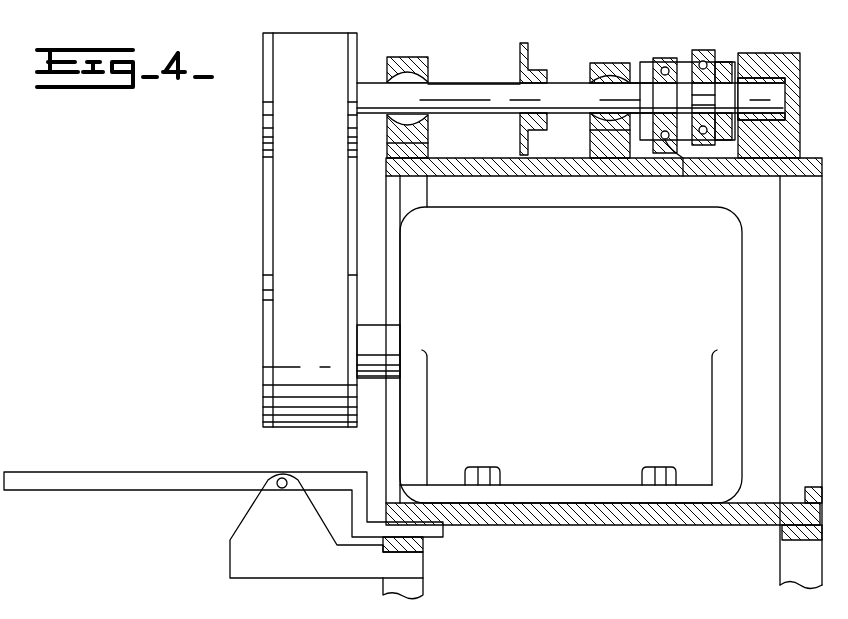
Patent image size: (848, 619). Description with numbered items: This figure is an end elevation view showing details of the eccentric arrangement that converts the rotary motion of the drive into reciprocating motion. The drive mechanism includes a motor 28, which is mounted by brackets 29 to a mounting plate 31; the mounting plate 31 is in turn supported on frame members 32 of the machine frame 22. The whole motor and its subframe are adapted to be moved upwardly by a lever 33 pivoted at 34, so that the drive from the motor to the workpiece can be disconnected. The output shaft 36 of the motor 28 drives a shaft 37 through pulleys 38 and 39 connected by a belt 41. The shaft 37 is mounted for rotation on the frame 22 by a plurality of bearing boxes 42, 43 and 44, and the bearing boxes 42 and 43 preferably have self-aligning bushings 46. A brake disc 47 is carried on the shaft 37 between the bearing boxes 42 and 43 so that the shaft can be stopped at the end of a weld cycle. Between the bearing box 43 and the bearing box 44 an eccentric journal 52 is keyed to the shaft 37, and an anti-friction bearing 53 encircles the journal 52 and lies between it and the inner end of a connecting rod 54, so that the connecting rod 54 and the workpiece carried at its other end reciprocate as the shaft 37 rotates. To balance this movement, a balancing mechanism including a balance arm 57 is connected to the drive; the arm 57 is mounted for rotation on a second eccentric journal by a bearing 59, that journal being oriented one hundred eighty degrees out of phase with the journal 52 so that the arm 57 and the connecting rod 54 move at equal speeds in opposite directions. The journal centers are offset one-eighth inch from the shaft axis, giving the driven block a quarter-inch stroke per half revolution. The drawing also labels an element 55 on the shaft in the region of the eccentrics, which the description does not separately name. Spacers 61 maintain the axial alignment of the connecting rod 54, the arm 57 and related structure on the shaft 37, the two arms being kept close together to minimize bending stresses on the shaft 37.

The machine frame 22 is at (538, 176).
The motor 28 is at (566, 279).
The brackets 29 is at (530, 490).
The mounting plate 31 is at (583, 525).
The frame members 32 is at (424, 548).
The lever 33 is at (70, 479).
The pivot 34 is at (284, 480).
The output shaft 36 is at (390, 353).
The shaft 37 is at (450, 105).
The pulley 38 is at (266, 295).
The pulley 39 is at (266, 47).
The belt 41 is at (322, 226).
The bearing box 42 is at (398, 57).
The bearing box 43 is at (606, 40).
The bearing box 44 is at (784, 55).
The self-aligning bushings 46 is at (431, 85).
The brake disc 47 is at (523, 43).
The eccentric journal 52 is at (728, 62).
The anti-friction bearing 53 is at (708, 50).
The connecting rod 54 is at (700, 50).
The hub 55 is at (640, 99).
The balance arm 57 is at (662, 58).
The bearing 59 is at (650, 70).
The spacers 61 is at (683, 176).